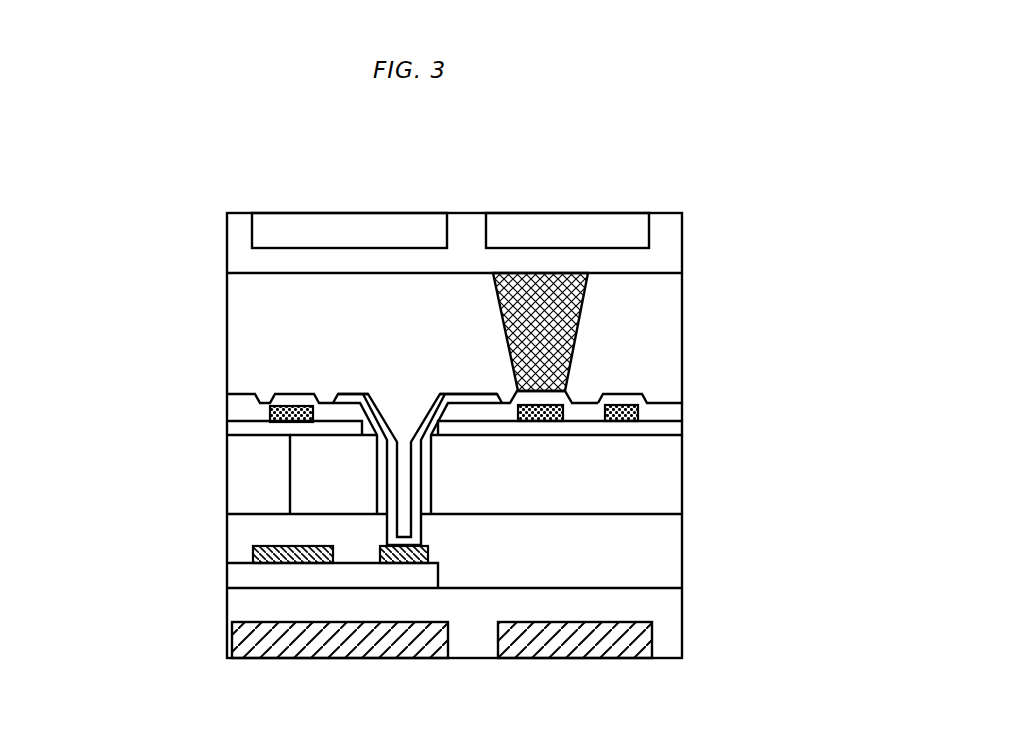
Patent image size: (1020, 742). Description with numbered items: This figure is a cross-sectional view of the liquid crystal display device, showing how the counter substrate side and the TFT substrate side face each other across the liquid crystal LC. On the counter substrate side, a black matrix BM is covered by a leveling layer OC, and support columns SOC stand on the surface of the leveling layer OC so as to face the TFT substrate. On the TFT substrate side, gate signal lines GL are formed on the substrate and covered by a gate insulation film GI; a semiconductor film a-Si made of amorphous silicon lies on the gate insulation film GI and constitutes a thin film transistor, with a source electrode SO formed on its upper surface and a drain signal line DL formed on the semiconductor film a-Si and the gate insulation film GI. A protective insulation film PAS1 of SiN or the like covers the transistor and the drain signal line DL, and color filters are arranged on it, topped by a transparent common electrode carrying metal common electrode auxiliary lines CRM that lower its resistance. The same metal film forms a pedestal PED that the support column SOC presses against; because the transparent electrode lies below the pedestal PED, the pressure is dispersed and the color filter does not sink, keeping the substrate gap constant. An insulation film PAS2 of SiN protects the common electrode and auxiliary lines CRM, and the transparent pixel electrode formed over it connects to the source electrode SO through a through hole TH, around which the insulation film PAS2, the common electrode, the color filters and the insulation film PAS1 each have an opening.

The black matrix BM is at (523, 223).
The leveling layer OC is at (665, 222).
The liquid crystal LC is at (432, 333).
The support column SOC is at (571, 308).
The pedestal PED is at (568, 398).
The common electrode auxiliary line CRM is at (285, 405).
The insulation film PAS2 is at (676, 411).
The through hole TH is at (390, 486).
The insulation film PAS1 is at (664, 548).
The drain signal line DL is at (253, 551).
The source electrode SO is at (407, 565).
The semiconductor film a-Si is at (242, 577).
The gate insulation film GI is at (668, 609).
The gate signal line GL is at (375, 647).